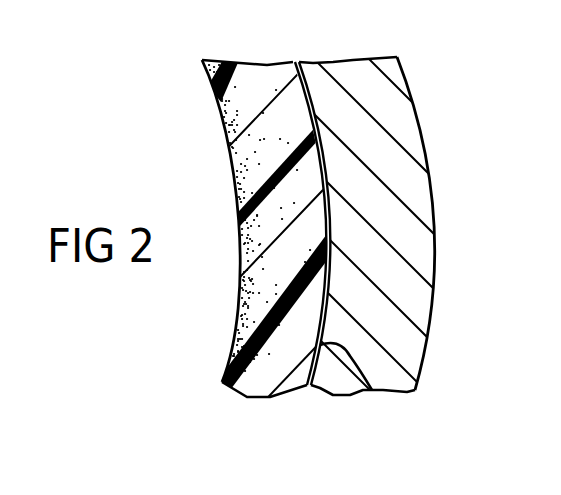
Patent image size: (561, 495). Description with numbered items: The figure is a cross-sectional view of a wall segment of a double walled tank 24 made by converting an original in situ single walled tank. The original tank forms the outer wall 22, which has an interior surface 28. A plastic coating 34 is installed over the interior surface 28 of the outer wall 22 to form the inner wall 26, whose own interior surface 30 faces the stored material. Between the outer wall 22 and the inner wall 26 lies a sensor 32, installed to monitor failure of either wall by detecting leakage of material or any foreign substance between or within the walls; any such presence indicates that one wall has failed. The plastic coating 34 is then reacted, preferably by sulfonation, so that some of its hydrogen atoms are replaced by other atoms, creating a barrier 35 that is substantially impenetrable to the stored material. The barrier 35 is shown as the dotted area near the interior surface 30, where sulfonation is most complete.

The outer wall 22 is at (400, 122).
The double walled tank 24 is at (172, 160).
The inner wall 26 is at (268, 72).
The interior surface 28 is at (372, 390).
The interior surface 30 is at (240, 340).
The sensor 32 is at (295, 62).
The plastic coating 34 is at (268, 380).
The barrier 35 is at (235, 102).